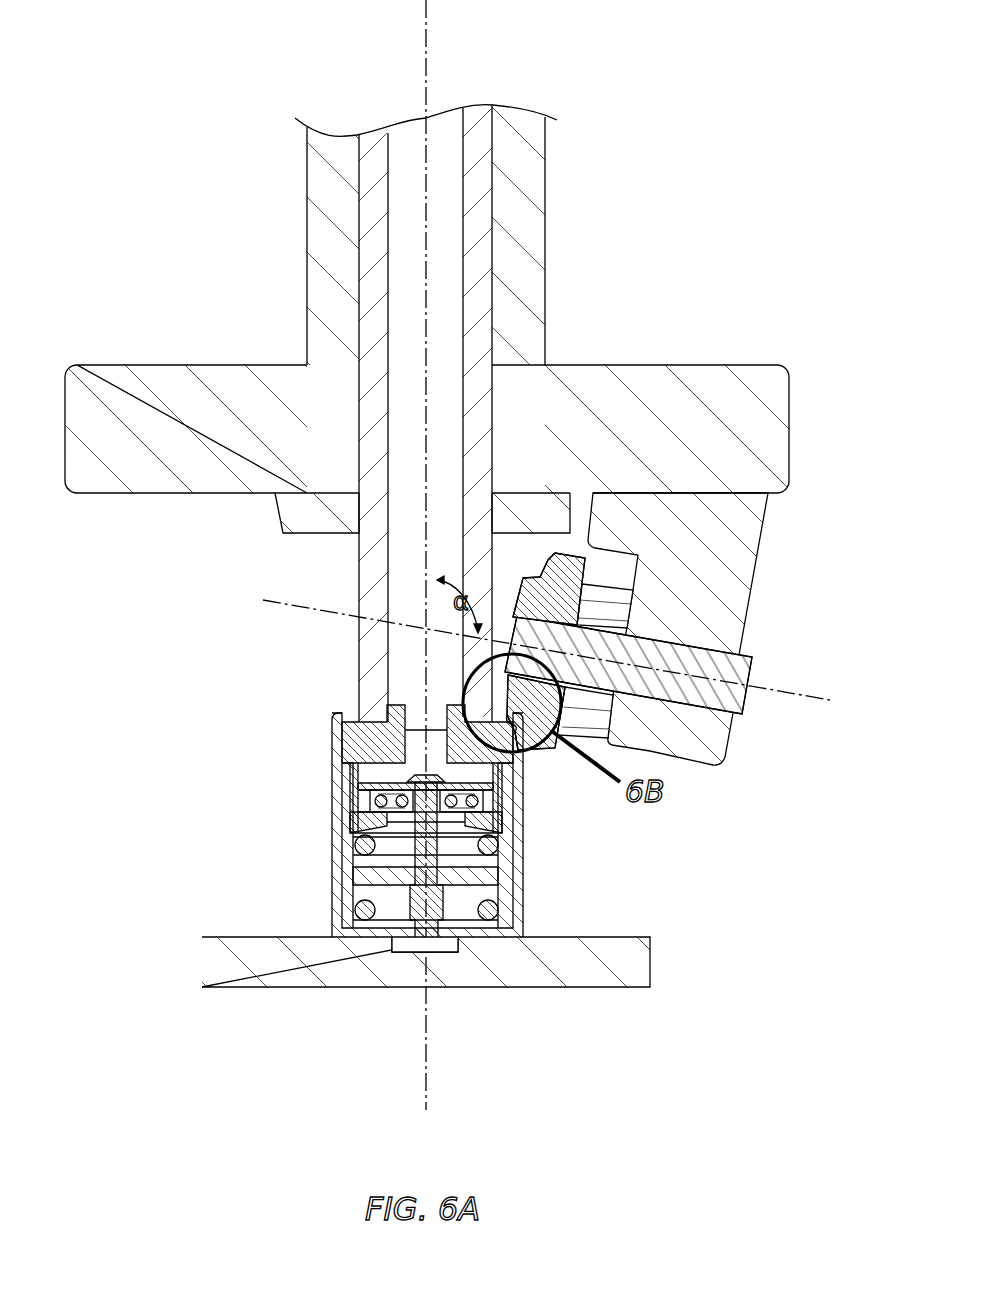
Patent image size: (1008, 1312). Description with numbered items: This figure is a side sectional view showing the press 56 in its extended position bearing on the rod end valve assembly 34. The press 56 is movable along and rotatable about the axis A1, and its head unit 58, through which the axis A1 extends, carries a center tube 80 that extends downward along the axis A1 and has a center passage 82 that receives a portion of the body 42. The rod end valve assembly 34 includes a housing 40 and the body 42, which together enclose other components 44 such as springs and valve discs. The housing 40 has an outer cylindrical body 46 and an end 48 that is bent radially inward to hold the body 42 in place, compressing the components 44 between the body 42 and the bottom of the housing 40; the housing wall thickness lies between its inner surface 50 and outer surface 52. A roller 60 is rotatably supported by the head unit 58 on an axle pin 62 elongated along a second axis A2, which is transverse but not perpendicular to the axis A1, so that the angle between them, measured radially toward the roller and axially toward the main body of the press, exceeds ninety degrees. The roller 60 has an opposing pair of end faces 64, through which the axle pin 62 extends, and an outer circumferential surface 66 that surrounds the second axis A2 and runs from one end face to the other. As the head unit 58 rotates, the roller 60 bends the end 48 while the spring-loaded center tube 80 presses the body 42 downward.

The rod end valve assembly 34 is at (234, 827).
The housing 40 is at (522, 892).
The body 42 is at (350, 742).
The components 44 is at (392, 843).
The outer cylindrical body 46 is at (336, 833).
The end 48 is at (357, 721).
The inner surface 50 is at (348, 776).
The outer surface 52 is at (522, 857).
The press 56 is at (545, 248).
The head unit 58 is at (790, 412).
The rollers 60 is at (553, 605).
The axle pin 62 is at (735, 695).
The end faces 64 is at (505, 695).
The outer circumferential surface 66 is at (522, 738).
The center tube 80 is at (358, 600).
The center passage 82 is at (403, 580).
The axis A1 is at (427, 50).
The second axis A2 is at (800, 693).